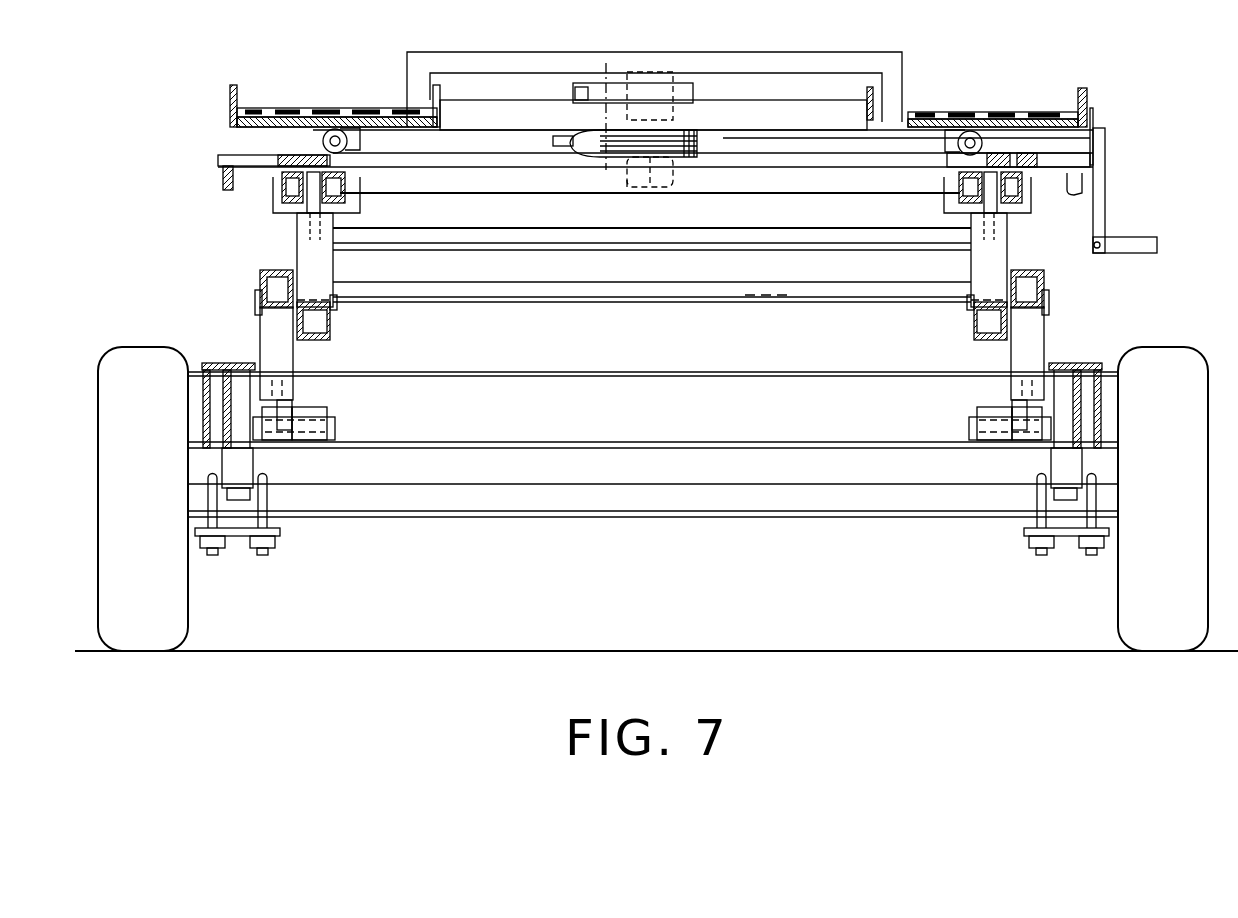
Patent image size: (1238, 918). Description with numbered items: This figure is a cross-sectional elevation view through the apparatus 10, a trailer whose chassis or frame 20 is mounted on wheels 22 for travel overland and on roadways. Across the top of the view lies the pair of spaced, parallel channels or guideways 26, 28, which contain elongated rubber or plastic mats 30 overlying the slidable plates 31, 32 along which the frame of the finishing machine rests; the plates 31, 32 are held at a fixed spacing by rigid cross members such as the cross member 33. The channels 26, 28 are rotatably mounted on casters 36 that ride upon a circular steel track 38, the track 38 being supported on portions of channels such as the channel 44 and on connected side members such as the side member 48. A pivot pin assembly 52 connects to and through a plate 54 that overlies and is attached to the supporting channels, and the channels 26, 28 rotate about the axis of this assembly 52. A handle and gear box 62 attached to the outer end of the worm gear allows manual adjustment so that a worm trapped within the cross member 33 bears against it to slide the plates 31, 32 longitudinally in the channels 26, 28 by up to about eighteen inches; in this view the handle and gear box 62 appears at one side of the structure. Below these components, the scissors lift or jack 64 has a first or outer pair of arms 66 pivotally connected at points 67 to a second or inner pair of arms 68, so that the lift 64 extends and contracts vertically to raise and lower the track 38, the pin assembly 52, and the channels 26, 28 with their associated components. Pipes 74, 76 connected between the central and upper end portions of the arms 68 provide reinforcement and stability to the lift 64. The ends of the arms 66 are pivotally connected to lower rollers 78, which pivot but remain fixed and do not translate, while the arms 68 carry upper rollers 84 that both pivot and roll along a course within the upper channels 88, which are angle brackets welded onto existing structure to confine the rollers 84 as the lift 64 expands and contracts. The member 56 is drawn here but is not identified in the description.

The apparatus 10 is at (1108, 113).
The frame 20 is at (243, 362).
The wheels 22 is at (122, 354).
The channel 26 is at (240, 88).
The channel 28 is at (1087, 92).
The mats 30 is at (300, 108).
The slidable plate 31 is at (410, 106).
The slidable plate 32 is at (907, 110).
The cross member 33 is at (527, 53).
The casters 36 is at (358, 138).
The circular steel track 38 is at (300, 155).
The channel 44 is at (508, 194).
The side member 48 is at (226, 182).
The pivot pin assembly 52 is at (663, 80).
The plate 54 is at (573, 165).
The upper beam 56 is at (494, 120).
The handle and gear box 62 is at (1108, 186).
The scissors lift 64 is at (333, 268).
The outer arms 66 is at (260, 336).
The pivot points 67 is at (337, 303).
The inner arms 68 is at (297, 245).
The pipe 74 is at (738, 296).
The pipe 76 is at (770, 214).
The lower rollers 78 is at (288, 440).
The upper rollers 84 is at (357, 203).
The upper channels 88 is at (275, 205).